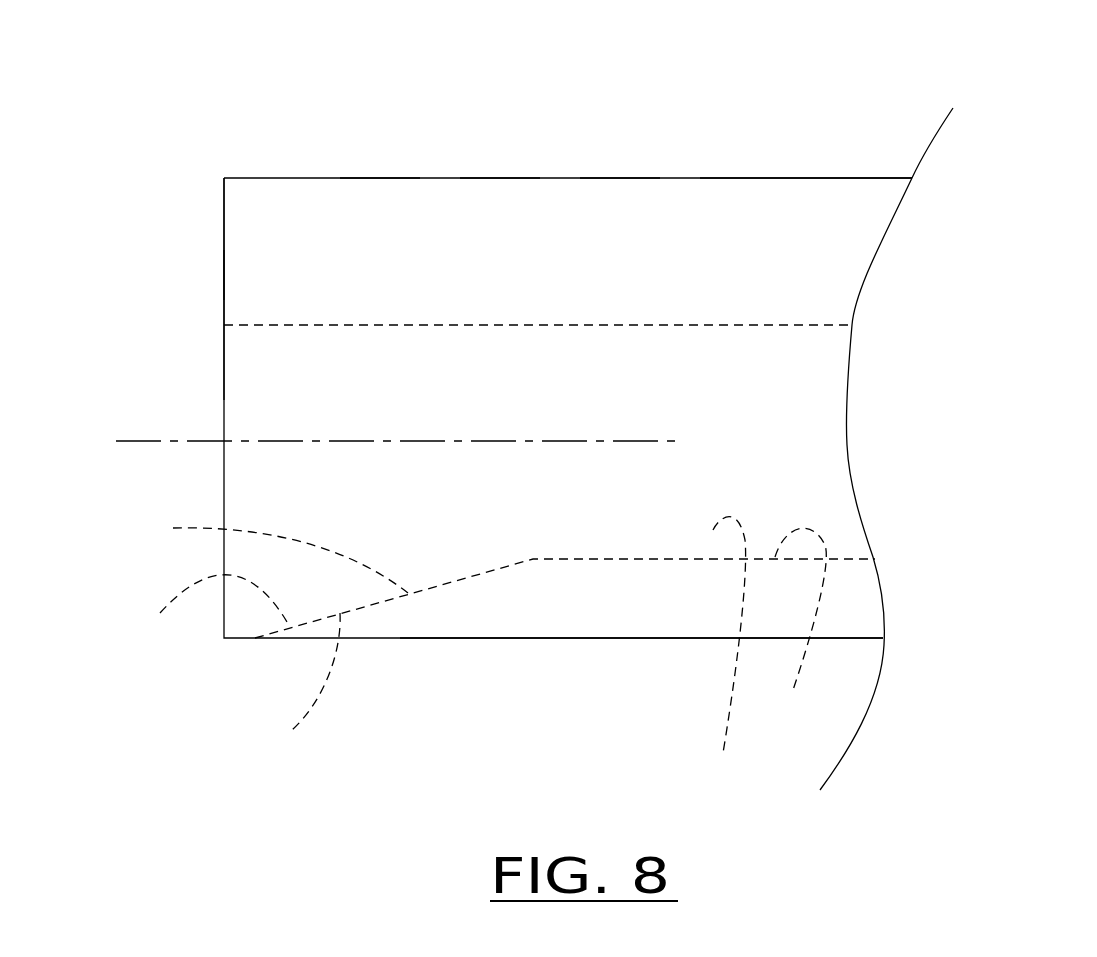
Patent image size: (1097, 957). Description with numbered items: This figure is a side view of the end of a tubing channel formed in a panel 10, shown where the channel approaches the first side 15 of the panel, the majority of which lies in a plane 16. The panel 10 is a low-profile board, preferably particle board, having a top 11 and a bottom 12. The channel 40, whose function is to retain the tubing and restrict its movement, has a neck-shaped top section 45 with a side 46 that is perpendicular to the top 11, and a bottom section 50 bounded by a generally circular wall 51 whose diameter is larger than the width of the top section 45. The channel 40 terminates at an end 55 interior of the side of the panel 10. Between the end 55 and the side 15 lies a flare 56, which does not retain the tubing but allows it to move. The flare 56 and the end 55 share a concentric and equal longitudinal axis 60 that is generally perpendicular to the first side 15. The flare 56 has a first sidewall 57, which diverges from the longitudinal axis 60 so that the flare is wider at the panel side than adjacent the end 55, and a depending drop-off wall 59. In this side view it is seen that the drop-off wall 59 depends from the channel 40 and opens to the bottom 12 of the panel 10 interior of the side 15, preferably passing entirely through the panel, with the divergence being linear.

The panel 10 is at (712, 178).
The top 11 is at (792, 178).
The bottom 12 is at (487, 638).
The first side 15 is at (224, 232).
The plane 16 is at (224, 282).
The channel 40 is at (602, 240).
The top section 45 is at (477, 240).
The side 46 is at (356, 232).
The bottom section 50 is at (721, 668).
The wall 51 is at (801, 637).
The end 55 is at (567, 560).
The flare 56 is at (301, 700).
The first sidewall 57 is at (427, 713).
The depending drop-off wall 59 is at (196, 618).
The longitudinal axis 60 is at (137, 441).